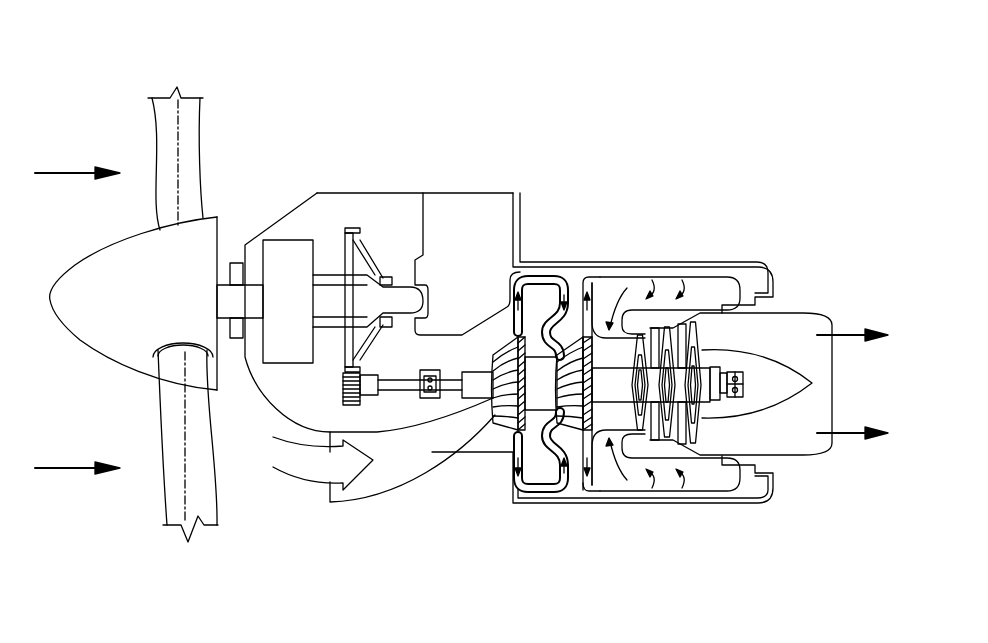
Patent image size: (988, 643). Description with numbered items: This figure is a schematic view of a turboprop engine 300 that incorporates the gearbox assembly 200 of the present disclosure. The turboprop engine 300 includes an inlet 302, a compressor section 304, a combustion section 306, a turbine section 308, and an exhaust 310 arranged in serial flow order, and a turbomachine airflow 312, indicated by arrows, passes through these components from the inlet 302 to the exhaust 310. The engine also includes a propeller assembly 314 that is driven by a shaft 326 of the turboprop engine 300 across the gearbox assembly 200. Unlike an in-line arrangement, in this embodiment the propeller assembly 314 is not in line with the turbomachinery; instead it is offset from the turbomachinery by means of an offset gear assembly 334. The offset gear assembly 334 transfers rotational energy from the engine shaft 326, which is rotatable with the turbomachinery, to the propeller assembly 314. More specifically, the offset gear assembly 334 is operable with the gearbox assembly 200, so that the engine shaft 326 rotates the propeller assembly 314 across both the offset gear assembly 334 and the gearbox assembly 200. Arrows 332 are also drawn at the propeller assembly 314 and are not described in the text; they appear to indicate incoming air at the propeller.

The gearbox assembly 200 is at (285, 260).
The turboprop engine 300 is at (622, 103).
The inlet 302 is at (322, 490).
The compressor section 304 is at (502, 425).
The combustion section 306 is at (660, 273).
The turbine section 308 is at (650, 443).
The exhaust 310 is at (847, 368).
The turbomachine airflow 312 is at (300, 460).
The propeller assembly 314 is at (130, 98).
The shaft 326 is at (403, 380).
The incoming air 332 is at (72, 172).
The offset gear assembly 334 is at (378, 248).